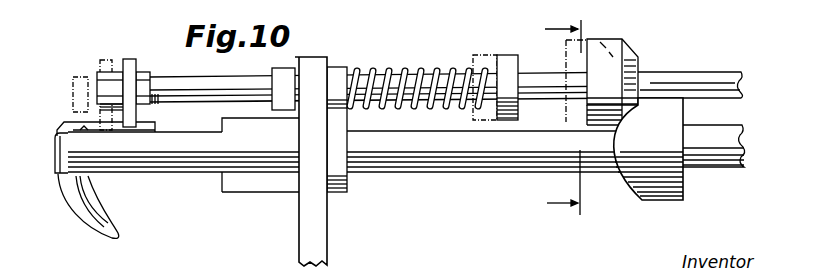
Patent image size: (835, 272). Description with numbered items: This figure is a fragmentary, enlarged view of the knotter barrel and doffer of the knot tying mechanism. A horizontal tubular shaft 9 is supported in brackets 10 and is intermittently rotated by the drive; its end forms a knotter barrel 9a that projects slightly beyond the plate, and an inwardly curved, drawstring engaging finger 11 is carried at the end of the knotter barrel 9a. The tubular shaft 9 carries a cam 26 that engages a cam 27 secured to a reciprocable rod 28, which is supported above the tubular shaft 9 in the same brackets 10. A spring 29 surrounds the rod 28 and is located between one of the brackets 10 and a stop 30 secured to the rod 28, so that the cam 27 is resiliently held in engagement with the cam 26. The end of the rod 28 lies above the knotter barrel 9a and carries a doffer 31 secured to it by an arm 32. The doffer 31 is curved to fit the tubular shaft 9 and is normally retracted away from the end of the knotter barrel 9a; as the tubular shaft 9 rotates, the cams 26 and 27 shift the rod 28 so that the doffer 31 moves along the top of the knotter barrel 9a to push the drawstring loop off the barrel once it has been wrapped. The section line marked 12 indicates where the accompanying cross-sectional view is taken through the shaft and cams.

The tubular shaft 9 is at (418, 169).
The knotter barrel 9a is at (68, 150).
The brackets 10 is at (327, 234).
The drawstring engaging finger 11 is at (82, 218).
The section line 12 is at (566, 119).
The cam 26 is at (641, 200).
The cam 27 is at (608, 39).
The reciprocable rod 28 is at (712, 44).
The spring 29 is at (403, 38).
The stop 30 is at (500, 55).
The doffer 31 is at (88, 127).
The arm 32 is at (134, 116).